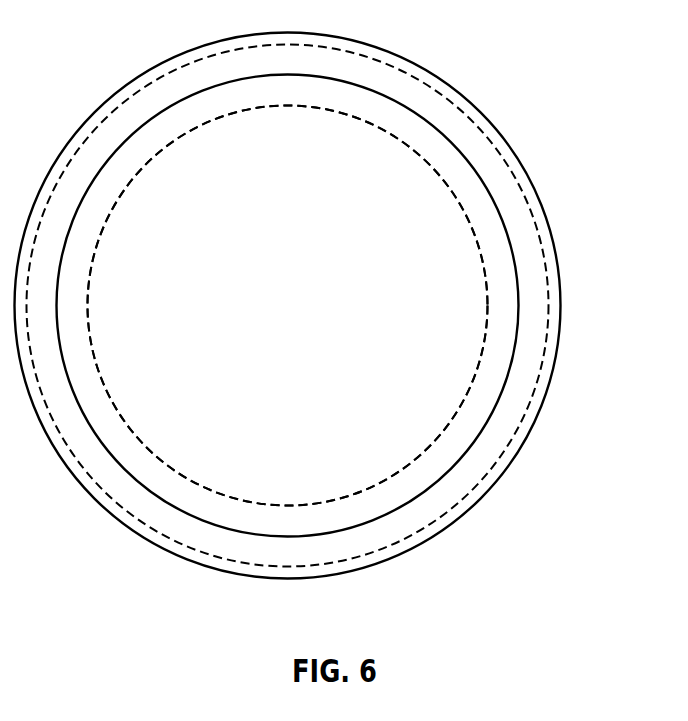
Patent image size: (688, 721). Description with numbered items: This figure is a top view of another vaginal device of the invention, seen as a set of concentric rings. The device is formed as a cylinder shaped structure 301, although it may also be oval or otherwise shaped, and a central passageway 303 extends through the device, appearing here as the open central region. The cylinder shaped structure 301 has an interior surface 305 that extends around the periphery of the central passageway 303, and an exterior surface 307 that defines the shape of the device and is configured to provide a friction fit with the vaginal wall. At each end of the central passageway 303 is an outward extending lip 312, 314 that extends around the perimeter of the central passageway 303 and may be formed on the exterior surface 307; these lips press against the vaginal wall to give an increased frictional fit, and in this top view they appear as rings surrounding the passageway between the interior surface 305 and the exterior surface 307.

The cylinder shaped structure 301 is at (336, 296).
The central passageway 303 is at (388, 187).
The interior surface 305 is at (486, 344).
The exterior surface 307 is at (560, 278).
The outward extending lip 312 is at (188, 123).
The outward extending lip 314 is at (442, 513).